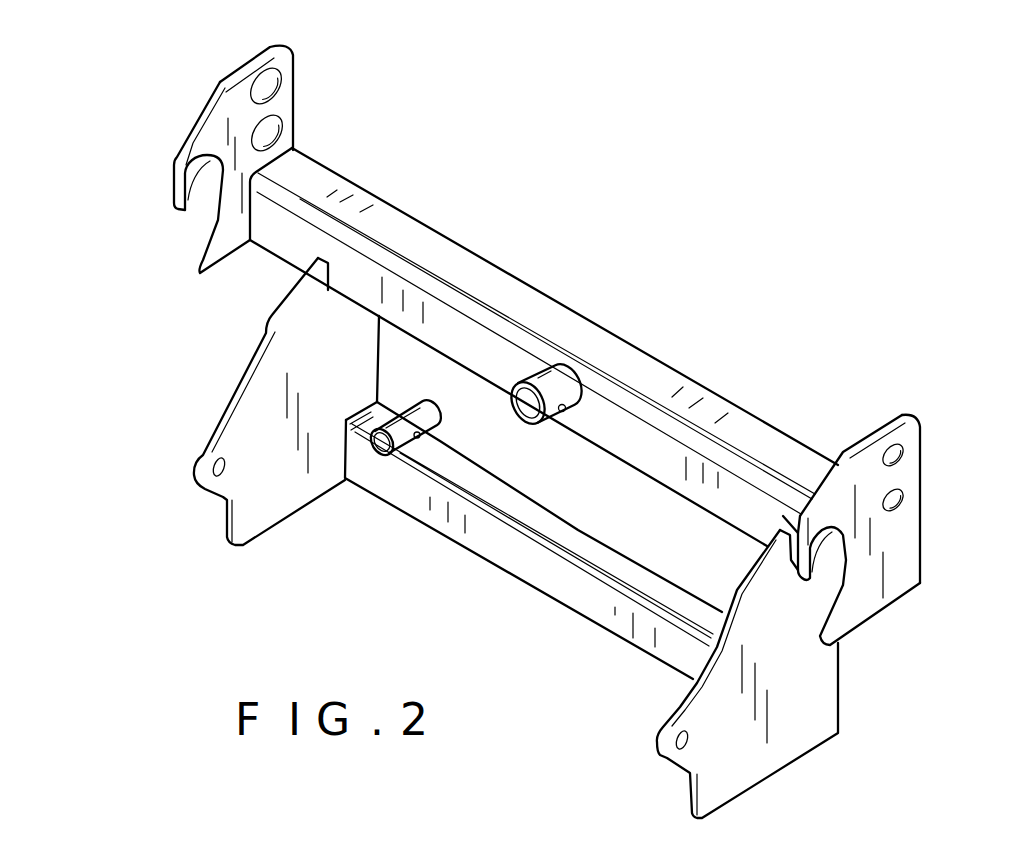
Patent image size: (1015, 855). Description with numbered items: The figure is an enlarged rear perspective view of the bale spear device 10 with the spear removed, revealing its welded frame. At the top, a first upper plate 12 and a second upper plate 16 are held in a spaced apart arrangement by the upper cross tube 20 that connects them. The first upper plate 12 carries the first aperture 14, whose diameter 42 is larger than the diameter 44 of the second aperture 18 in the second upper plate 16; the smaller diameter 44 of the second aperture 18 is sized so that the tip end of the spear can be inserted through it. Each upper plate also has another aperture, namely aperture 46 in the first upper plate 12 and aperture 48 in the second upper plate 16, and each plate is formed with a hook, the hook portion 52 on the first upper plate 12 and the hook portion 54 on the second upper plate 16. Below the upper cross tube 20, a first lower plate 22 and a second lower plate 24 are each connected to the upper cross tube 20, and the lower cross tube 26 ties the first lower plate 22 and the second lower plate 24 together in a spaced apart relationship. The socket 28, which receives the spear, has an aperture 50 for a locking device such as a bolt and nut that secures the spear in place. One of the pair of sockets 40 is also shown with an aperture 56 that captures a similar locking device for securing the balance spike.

The bale spear device 10 is at (593, 222).
The first upper plate 12 is at (200, 243).
The first aperture 14 is at (280, 118).
The second upper plate 16 is at (882, 433).
The second aperture 18 is at (903, 448).
The upper cross tube 20 is at (283, 230).
The first lower plate 22 is at (232, 415).
The second lower plate 24 is at (685, 707).
The lower cross tube 26 is at (540, 562).
The socket 28 is at (527, 412).
The socket 40 is at (380, 441).
The diameter 42 is at (266, 133).
The diameter 44 is at (900, 463).
The aperture 46 is at (280, 80).
The aperture 48 is at (900, 507).
The aperture 50 is at (567, 409).
The hook portion 52 is at (203, 170).
The hook portion 54 is at (842, 528).
The aperture 56 is at (420, 437).